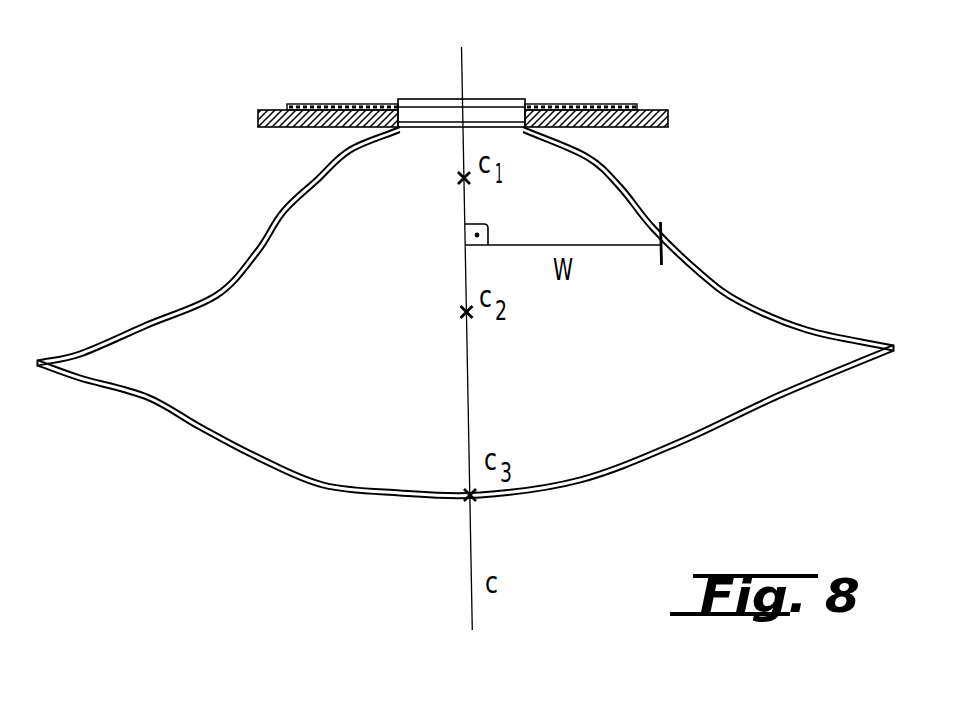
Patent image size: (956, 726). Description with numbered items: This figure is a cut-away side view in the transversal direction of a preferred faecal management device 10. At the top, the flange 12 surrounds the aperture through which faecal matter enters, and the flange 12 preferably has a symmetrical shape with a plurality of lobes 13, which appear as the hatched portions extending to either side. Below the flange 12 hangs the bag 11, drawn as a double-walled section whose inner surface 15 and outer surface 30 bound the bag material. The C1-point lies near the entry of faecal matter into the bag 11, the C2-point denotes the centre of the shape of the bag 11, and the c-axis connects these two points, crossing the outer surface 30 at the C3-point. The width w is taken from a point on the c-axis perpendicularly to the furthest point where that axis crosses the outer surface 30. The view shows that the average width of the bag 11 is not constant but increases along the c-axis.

The faecal management device 10 is at (742, 163).
The bag 11 is at (423, 455).
The flange 12 is at (555, 99).
The lobe 13 is at (280, 108).
The inner surface 15 is at (732, 303).
The outer surface 30 is at (695, 270).